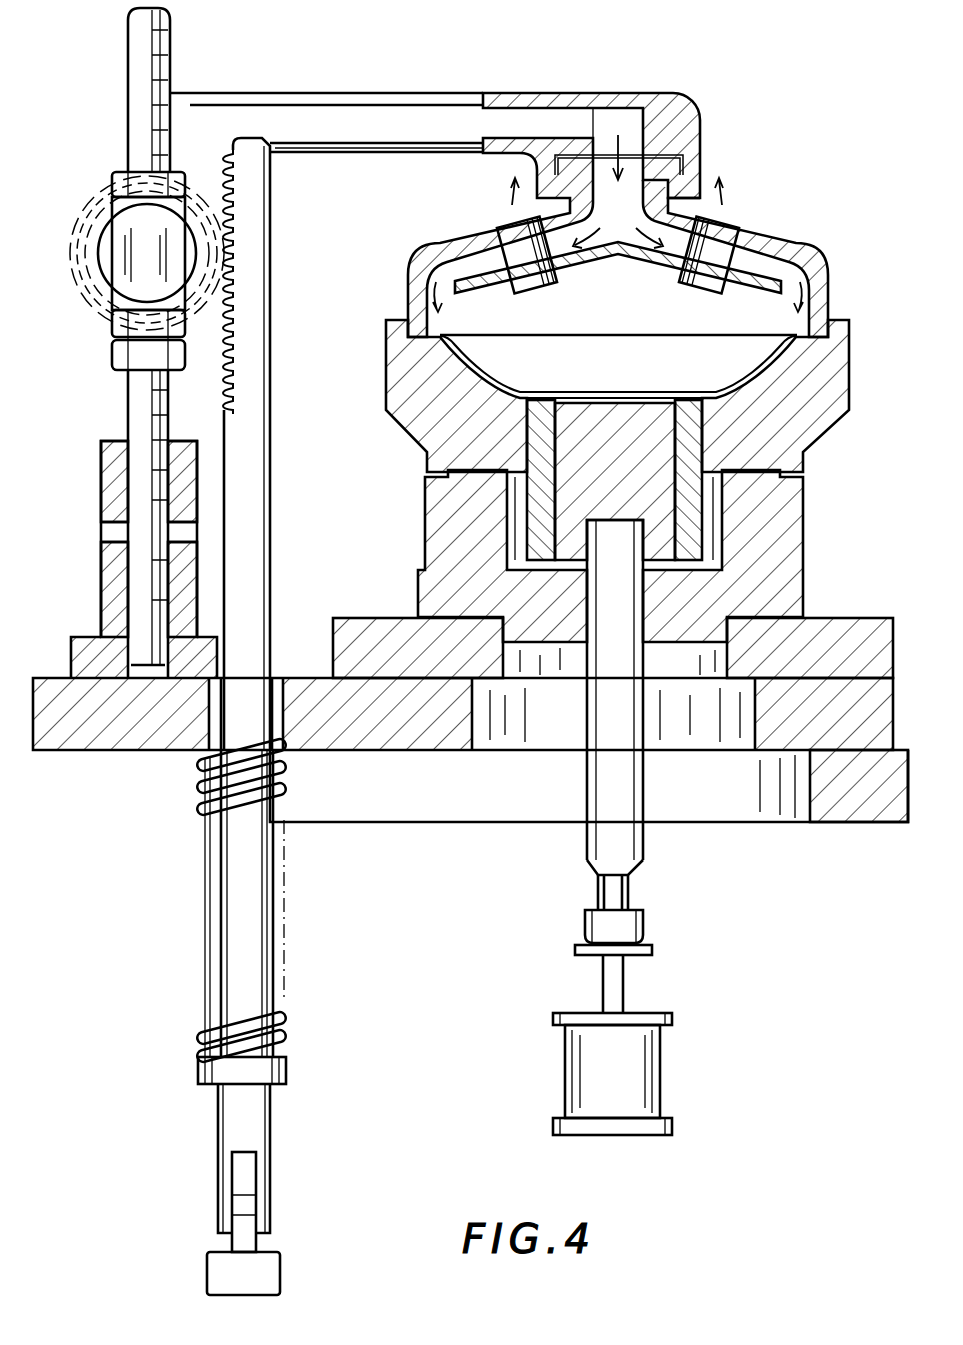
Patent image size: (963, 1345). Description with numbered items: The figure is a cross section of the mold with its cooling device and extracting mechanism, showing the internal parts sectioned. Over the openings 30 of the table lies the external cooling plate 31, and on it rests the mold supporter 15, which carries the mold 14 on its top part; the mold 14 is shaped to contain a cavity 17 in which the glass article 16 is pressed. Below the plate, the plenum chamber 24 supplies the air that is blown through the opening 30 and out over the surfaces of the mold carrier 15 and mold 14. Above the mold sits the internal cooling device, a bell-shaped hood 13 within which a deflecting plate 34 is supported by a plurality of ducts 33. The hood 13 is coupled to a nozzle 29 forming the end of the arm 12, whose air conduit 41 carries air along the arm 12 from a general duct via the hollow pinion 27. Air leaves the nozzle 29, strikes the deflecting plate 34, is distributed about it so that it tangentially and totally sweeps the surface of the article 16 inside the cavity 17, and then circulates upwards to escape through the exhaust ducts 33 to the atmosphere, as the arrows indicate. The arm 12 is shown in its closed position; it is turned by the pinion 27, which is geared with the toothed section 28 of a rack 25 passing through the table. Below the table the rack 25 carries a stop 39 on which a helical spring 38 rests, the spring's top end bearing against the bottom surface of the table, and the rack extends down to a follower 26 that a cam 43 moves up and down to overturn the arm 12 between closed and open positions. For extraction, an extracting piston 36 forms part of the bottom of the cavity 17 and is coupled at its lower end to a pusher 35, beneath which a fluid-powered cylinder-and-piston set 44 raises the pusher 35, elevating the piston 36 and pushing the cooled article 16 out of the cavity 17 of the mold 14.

The arm 12 is at (409, 104).
The hood 13 is at (830, 270).
The mold 14 is at (850, 377).
The mold supporter 15 is at (797, 531).
The article 16 is at (654, 393).
The cavity 17 is at (613, 372).
The plenum chamber 24 is at (486, 1069).
The rack 25 is at (270, 516).
The follower 26 is at (258, 1243).
The hollow pinion 27 is at (212, 300).
The toothed section 28 is at (227, 302).
The nozzle 29 is at (680, 122).
The opening 30 is at (750, 735).
The external cooling plate 31 is at (861, 620).
The ducts 33 is at (732, 236).
The deflecting plate 34 is at (765, 280).
The pusher 35 is at (587, 855).
The extracting piston 36 is at (567, 497).
The helical spring 38 is at (285, 1030).
The stop 39 is at (288, 1078).
The air conduit 41 is at (612, 125).
The cam 43 is at (283, 1268).
The fluid-powered cylinder-and-piston set 44 is at (623, 987).